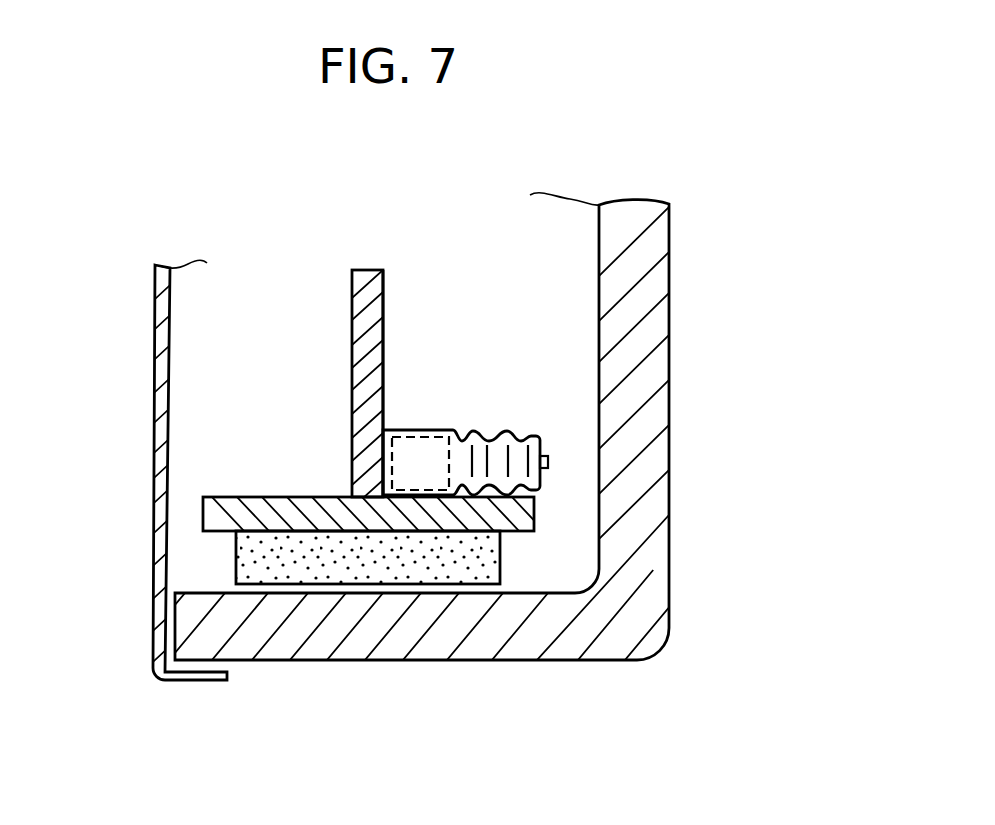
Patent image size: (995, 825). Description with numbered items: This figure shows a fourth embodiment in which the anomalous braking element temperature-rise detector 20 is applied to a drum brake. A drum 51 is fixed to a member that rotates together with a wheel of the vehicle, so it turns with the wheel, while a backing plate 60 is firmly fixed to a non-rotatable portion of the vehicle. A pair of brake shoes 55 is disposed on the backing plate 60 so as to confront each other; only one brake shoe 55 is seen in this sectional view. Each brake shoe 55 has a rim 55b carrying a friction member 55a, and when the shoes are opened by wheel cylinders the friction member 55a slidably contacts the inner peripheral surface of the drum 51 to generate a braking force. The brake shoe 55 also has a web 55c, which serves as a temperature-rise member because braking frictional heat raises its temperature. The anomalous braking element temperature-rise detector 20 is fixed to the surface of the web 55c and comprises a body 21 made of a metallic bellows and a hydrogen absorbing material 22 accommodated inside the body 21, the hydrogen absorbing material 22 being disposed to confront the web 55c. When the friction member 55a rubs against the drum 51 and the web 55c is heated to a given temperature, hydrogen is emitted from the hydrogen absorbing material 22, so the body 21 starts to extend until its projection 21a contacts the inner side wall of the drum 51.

The anomalous braking element temperature-rise detector 20 is at (579, 405).
The body 21 is at (455, 430).
The projection 21a is at (548, 462).
The hydrogen absorbing material 22 is at (395, 437).
The drum 51 is at (513, 643).
The brake shoe 55 is at (347, 268).
The friction member 55a is at (338, 562).
The rim 55b is at (223, 497).
The web 55c is at (383, 268).
The backing plate 60 is at (153, 533).